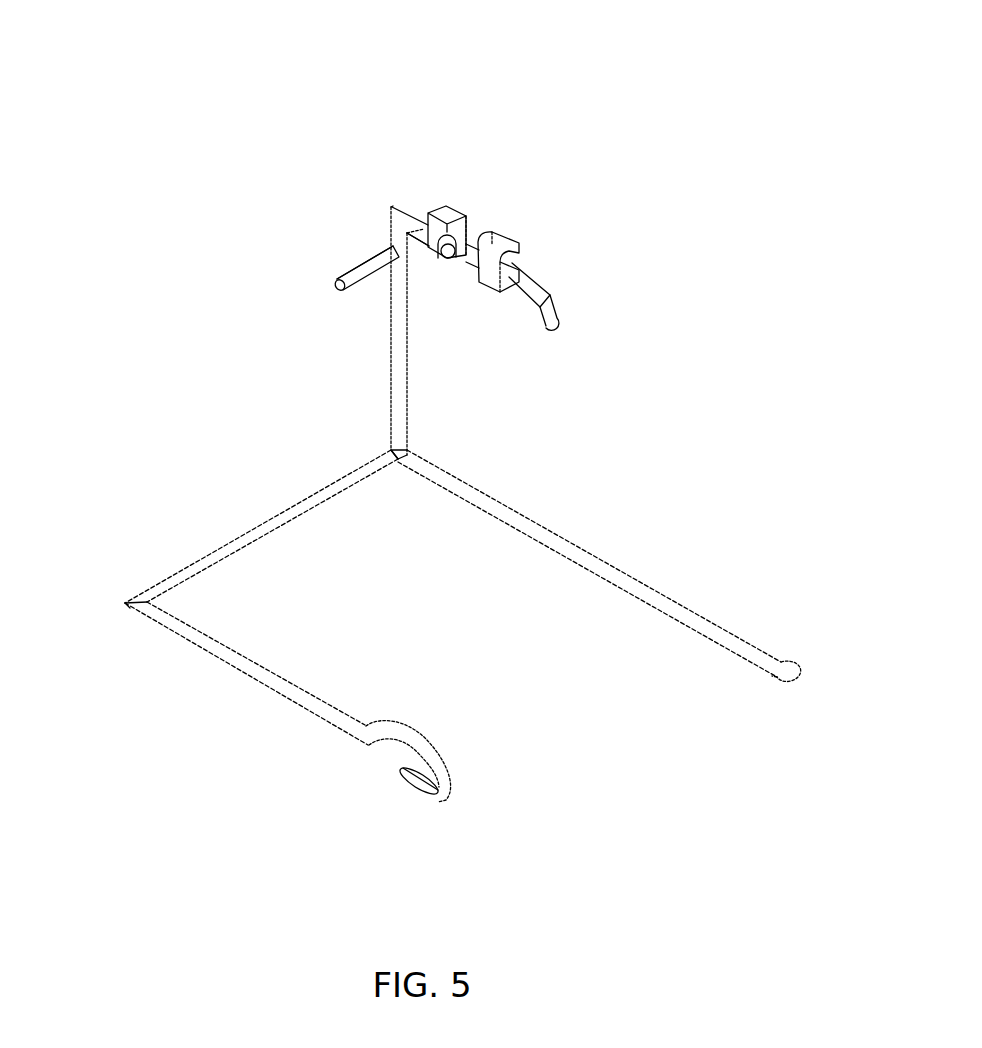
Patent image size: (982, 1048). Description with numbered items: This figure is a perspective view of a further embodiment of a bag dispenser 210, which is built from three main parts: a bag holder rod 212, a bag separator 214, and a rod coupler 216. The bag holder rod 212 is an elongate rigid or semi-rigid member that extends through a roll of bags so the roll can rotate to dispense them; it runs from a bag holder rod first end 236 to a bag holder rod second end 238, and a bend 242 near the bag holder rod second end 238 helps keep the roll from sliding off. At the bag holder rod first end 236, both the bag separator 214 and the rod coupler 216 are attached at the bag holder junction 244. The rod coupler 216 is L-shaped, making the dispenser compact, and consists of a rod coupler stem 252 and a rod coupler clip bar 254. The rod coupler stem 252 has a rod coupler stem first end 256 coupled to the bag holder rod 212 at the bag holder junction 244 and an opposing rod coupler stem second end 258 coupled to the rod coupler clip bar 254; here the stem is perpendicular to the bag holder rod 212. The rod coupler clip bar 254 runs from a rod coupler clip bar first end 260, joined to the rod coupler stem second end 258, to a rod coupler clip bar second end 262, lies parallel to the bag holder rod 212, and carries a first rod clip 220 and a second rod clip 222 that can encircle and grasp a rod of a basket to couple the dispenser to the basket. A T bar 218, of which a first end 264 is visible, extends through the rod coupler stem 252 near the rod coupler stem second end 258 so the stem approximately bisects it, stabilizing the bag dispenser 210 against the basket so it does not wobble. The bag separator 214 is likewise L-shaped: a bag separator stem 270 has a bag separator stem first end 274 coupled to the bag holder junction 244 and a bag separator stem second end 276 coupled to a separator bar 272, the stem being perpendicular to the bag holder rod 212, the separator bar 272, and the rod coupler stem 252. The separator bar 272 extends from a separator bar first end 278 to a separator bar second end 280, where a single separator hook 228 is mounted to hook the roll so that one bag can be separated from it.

The bag dispenser 210 is at (570, 95).
The bag holder rod 212 is at (638, 583).
The bag separator 214 is at (213, 732).
The rod coupler 216 is at (293, 247).
The T bar 218 is at (365, 272).
The first rod clip 220 is at (500, 235).
The second rod clip 222 is at (446, 212).
The separator hook 228 is at (430, 790).
The bag holder rod first end 236 is at (408, 455).
The bag holder rod second end 238 is at (797, 662).
The bend 242 is at (780, 673).
The bag holder junction 244 is at (386, 450).
The rod coupler stem 252 is at (407, 340).
The rod coupler clip bar 254 is at (525, 287).
The rod coupler stem first end 256 is at (400, 443).
The rod coupler stem second end 258 is at (400, 242).
The rod coupler clip bar first end 260 is at (392, 210).
The rod coupler clip bar second end 262 is at (558, 322).
The first end 264 is at (338, 287).
The bag separator stem 270 is at (268, 533).
The separator bar 272 is at (290, 690).
The bag separator stem first end 274 is at (397, 463).
The bag separator stem second end 276 is at (155, 593).
The separator bar first end 278 is at (140, 612).
The separator bar second end 280 is at (365, 726).